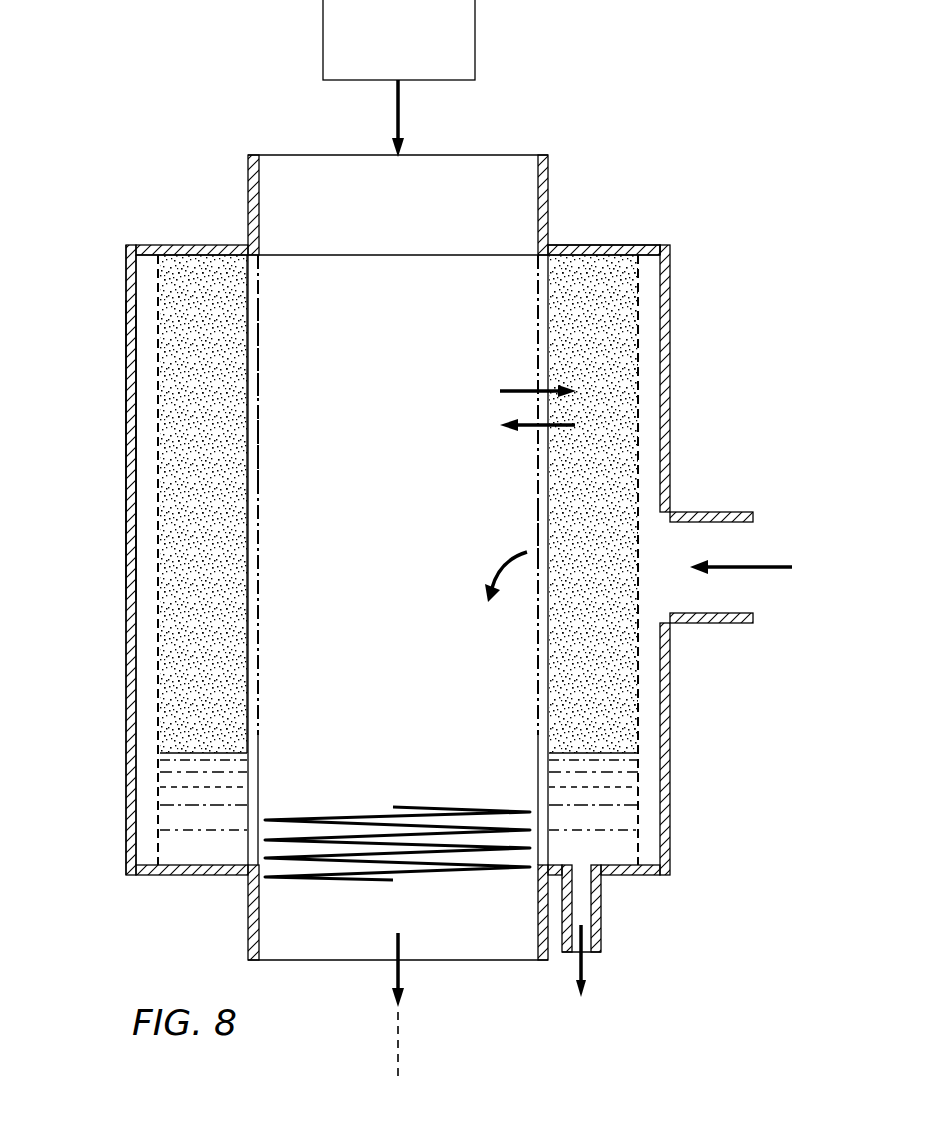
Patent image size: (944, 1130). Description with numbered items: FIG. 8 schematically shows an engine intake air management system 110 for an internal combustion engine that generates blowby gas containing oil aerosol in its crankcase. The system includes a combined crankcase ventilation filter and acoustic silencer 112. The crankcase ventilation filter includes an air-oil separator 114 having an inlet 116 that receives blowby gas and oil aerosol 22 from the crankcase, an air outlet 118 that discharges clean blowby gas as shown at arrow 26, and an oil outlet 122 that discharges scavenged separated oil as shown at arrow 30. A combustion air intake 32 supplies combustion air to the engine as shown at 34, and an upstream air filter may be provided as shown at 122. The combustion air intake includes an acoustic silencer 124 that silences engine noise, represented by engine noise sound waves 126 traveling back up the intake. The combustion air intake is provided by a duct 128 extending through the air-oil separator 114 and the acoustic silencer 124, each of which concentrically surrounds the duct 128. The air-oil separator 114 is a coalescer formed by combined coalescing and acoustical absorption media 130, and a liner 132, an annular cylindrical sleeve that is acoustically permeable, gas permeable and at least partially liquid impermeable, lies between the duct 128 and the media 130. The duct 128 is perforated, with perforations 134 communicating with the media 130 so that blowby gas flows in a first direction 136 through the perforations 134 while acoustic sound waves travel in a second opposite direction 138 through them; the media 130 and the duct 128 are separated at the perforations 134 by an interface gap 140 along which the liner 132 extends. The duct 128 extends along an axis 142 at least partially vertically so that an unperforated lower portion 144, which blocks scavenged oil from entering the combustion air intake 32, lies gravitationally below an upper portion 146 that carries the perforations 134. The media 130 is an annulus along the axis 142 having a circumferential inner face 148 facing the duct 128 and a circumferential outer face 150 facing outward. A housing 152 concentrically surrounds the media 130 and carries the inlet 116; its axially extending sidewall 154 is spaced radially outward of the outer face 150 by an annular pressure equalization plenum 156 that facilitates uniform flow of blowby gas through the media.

The blowby gas and oil aerosol 22 is at (752, 565).
The clean blowby gas 26 is at (500, 560).
The scavenged separated oil 30 is at (586, 970).
The combustion air intake 32 is at (248, 202).
The combustion air to the engine 34 is at (405, 970).
The engine intake air management system 110 is at (422, 542).
The combined crankcase ventilation filter and acoustic silencer 112 is at (112, 793).
The air-oil separator 114 is at (620, 733).
The inlet 116 is at (752, 600).
The air outlet 118 is at (538, 527).
The oil outlet 122 is at (476, 42).
The acoustic silencer 124 is at (565, 705).
The engine noise sound waves 126 is at (352, 815).
The duct 128 is at (258, 520).
The combined coalescing and acoustical absorption media 130 is at (623, 663).
The liner 132 is at (243, 616).
The perforations 134 is at (258, 367).
The first direction 136 is at (527, 432).
The second opposite direction 138 is at (520, 388).
The interface gap 140 is at (546, 258).
The axis 142 is at (400, 1042).
The lower portion 144 is at (258, 772).
The upper portion 146 is at (258, 445).
The circumferential inner face 148 is at (250, 458).
The circumferential outer face 150 is at (152, 434).
The housing 152 is at (116, 385).
The sidewall 154 is at (127, 415).
The annular pressure equalization plenum 156 is at (143, 463).